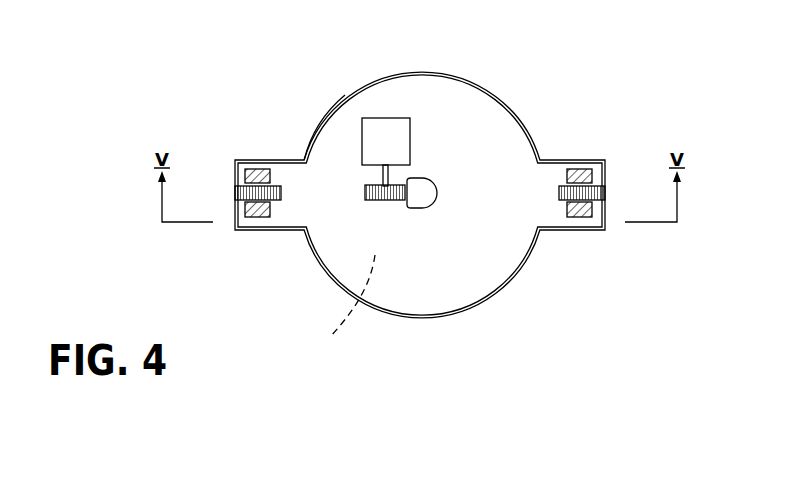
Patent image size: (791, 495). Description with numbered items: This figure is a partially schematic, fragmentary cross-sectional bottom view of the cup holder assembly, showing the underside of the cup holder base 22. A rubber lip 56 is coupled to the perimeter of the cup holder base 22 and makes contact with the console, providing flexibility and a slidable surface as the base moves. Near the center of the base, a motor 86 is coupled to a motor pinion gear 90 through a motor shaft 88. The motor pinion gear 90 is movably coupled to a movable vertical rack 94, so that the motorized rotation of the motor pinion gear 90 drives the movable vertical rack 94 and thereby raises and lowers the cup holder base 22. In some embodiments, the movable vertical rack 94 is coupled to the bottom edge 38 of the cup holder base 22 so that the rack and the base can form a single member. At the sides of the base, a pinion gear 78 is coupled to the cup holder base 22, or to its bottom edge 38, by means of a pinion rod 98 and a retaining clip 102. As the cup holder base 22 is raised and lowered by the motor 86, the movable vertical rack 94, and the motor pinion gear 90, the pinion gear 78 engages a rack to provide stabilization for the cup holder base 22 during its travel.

The cup holder base 22 is at (344, 311).
The bottom edge 38 is at (498, 260).
The rubber lip 56 is at (320, 127).
The pinion gear 78 is at (607, 190).
The motor 86 is at (384, 130).
The motor shaft 88 is at (388, 180).
The motor pinion gear 90 is at (365, 200).
The movable vertical rack 94 is at (422, 198).
The pinion rod 98 is at (575, 218).
The retaining clip 102 is at (592, 169).